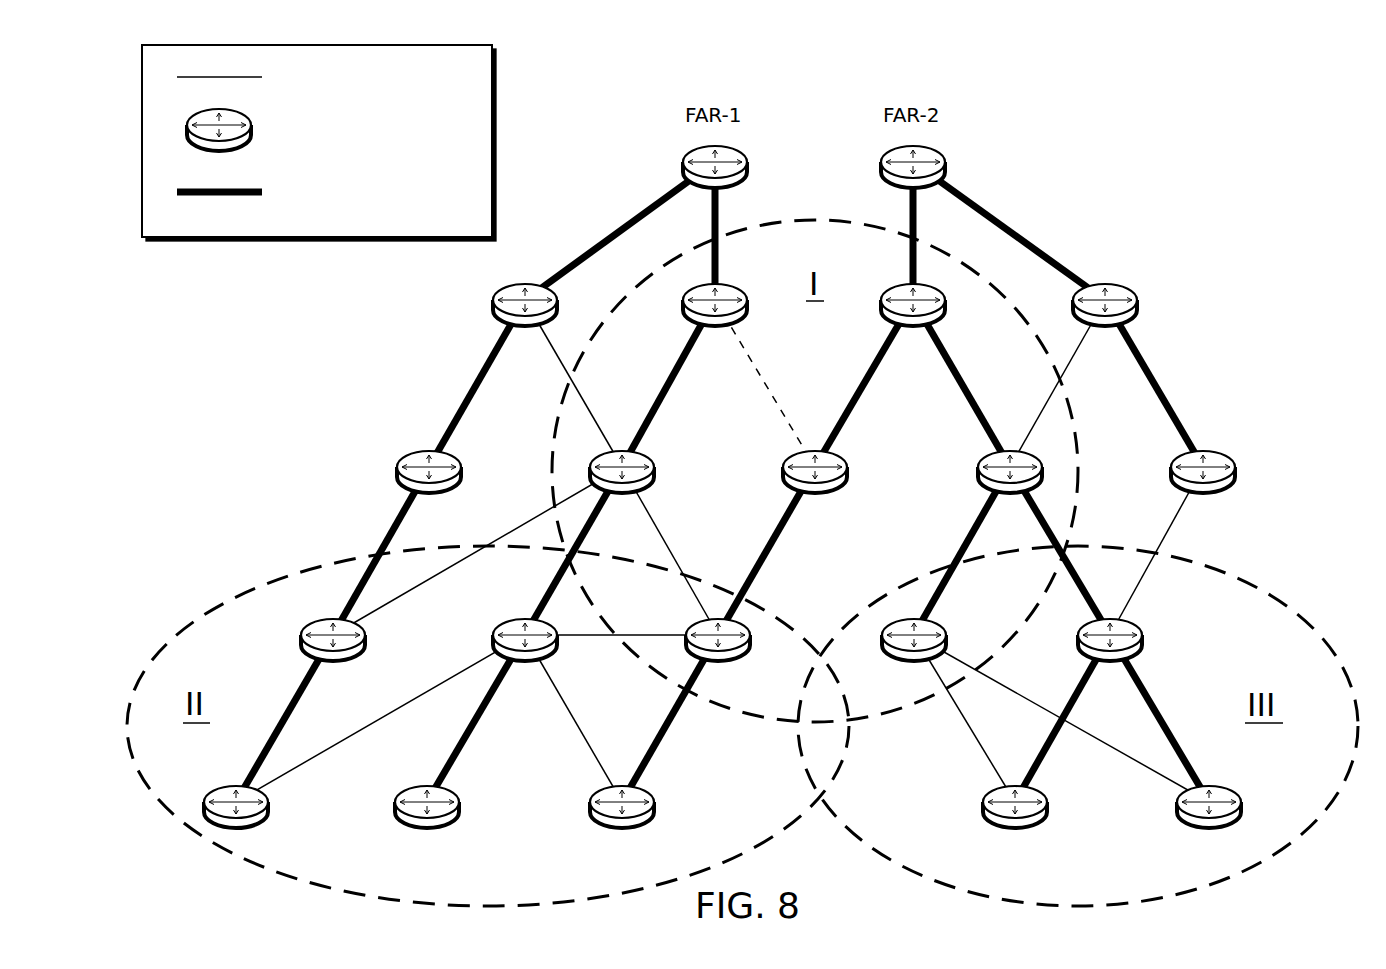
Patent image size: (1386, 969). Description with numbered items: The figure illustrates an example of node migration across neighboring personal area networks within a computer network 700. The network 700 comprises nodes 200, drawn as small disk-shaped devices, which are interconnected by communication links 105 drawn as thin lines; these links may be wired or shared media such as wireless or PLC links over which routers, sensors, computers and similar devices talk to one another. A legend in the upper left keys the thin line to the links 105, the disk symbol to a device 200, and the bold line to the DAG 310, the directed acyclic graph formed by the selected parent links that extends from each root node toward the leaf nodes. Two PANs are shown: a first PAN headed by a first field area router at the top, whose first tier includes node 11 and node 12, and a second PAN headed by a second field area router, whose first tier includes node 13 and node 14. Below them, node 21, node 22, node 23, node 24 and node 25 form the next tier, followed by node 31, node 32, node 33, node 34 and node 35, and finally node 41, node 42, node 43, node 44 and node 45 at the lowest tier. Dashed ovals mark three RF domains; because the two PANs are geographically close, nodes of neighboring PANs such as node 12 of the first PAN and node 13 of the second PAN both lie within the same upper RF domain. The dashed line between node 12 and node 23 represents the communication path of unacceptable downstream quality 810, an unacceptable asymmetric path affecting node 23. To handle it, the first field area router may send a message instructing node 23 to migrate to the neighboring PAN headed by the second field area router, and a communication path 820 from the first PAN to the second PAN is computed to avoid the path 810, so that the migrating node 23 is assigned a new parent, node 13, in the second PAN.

The computer network 700 is at (1277, 106).
The communication links 105 is at (289, 77).
The nodes/devices 200 is at (303, 130).
The DAG 310 is at (282, 192).
The communication path of unacceptable downstream quality 810 is at (775, 416).
The communication path 820 is at (856, 414).
The node 11 is at (525, 325).
The node 12 is at (715, 325).
The node 13 is at (913, 325).
The node 14 is at (1105, 325).
The node 21 is at (429, 491).
The node 22 is at (622, 491).
The node 23 is at (815, 491).
The node 24 is at (1010, 491).
The node 25 is at (1203, 491).
The node 31 is at (333, 658).
The node 32 is at (525, 658).
The node 33 is at (718, 658).
The node 34 is at (914, 658).
The node 35 is at (1110, 658).
The node 41 is at (244, 821).
The node 42 is at (427, 825).
The node 43 is at (622, 825).
The node 44 is at (1015, 825).
The node 45 is at (1209, 825).